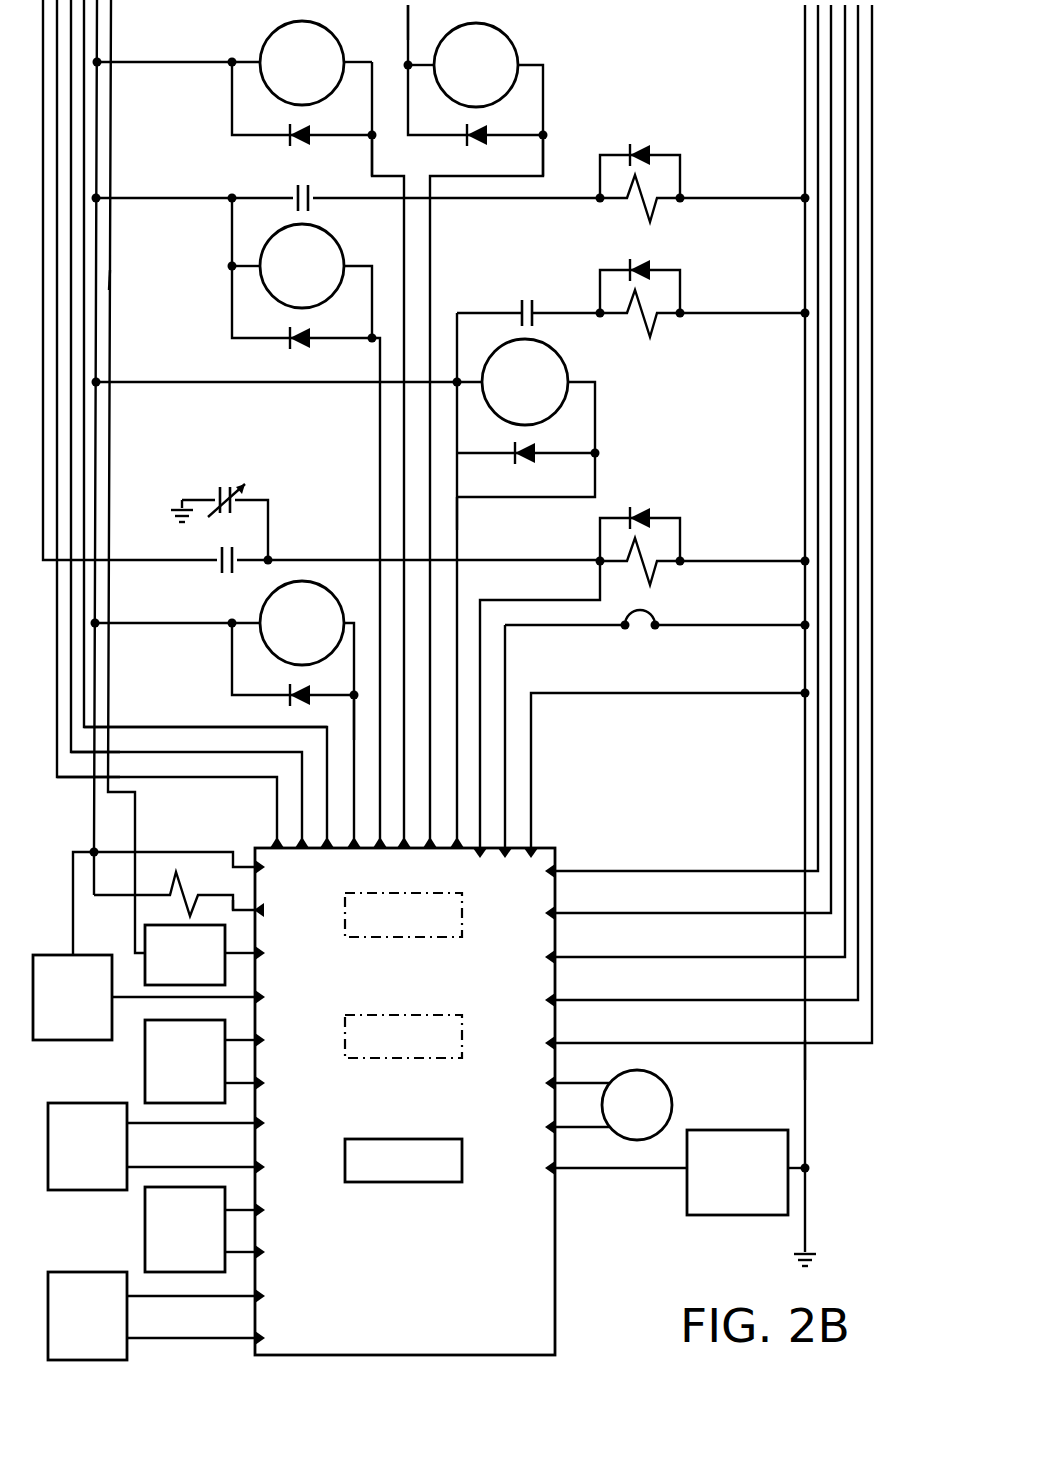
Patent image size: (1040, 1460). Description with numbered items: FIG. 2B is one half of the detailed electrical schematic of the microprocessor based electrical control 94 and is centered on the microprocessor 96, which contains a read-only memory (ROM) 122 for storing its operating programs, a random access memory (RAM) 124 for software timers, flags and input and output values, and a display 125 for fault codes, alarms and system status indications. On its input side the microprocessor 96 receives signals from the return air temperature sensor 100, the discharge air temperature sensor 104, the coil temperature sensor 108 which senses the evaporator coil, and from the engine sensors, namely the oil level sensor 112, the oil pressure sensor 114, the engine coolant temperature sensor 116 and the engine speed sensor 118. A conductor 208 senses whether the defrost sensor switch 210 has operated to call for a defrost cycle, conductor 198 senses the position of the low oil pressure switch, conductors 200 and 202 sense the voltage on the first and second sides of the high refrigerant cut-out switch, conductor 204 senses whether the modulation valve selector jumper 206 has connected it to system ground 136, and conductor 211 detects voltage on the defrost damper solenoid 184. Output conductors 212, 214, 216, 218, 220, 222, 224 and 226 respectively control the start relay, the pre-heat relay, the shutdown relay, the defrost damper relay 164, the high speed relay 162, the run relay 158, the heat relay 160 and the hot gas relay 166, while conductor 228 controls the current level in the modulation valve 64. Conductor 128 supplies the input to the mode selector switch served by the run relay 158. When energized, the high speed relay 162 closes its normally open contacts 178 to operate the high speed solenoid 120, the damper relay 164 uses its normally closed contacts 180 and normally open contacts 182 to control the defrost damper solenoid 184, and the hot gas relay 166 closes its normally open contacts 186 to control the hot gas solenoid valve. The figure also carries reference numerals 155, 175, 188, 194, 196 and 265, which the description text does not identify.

The modulation valve 64 is at (170, 893).
The microprocessor based electrical control 94 is at (53, 1166).
The microprocessor 96 is at (555, 1265).
The return air temperature sensor 100 is at (145, 1053).
The discharge air temperature sensor 104 is at (68, 1190).
The coil temperature sensor 108 is at (145, 1215).
The oil level sensor 112 is at (85, 1042).
The oil pressure sensor 114 is at (687, 1195).
The engine coolant temperature sensor 116 is at (83, 1272).
The engine speed sensor 118 is at (672, 1107).
The high speed solenoid 120 is at (632, 216).
The read-only memory (ROM) 122 is at (462, 930).
The random access memory (RAM) 124 is at (462, 1050).
The display 125 is at (462, 1162).
The conductor 128 is at (110, 283).
The system ground 136 is at (805, 1148).
The supply line 155 is at (111, 233).
The run relay 158 is at (249, 433).
The heat relay 160 is at (485, 426).
The high speed relay 162 is at (304, 523).
The defrost damper relay 164 is at (233, 709).
The hot gas relay 166 is at (533, 580).
The line 175 is at (408, 28).
The normally open contacts 178 is at (298, 186).
The normally closed contacts 180 is at (238, 490).
The normally open contacts 182 is at (228, 576).
The defrost damper solenoid 184 is at (650, 555).
The normally open contacts 186 is at (520, 300).
The hot gas solenoid 188 is at (648, 300).
The line 194 is at (805, 1050).
The line 196 is at (640, 1004).
The conductor 198 is at (648, 962).
The conductor 200 is at (638, 918).
The conductor 202 is at (634, 874).
The conductor 204 is at (590, 627).
The modulation valve selector jumper 206 is at (641, 640).
The conductor 208 is at (256, 950).
The defrost sensor switch 210 is at (145, 967).
The conductor 211 is at (486, 598).
The output conductor 212 is at (78, 754).
The output conductor 214 is at (66, 777).
The output conductor 216 is at (148, 727).
The output conductor 218 is at (354, 724).
The output conductor 220 is at (380, 394).
The output conductor 222 is at (372, 160).
The output conductor 224 is at (543, 162).
The output conductor 226 is at (457, 508).
The conductor 228 is at (256, 905).
The input line 265 is at (252, 860).